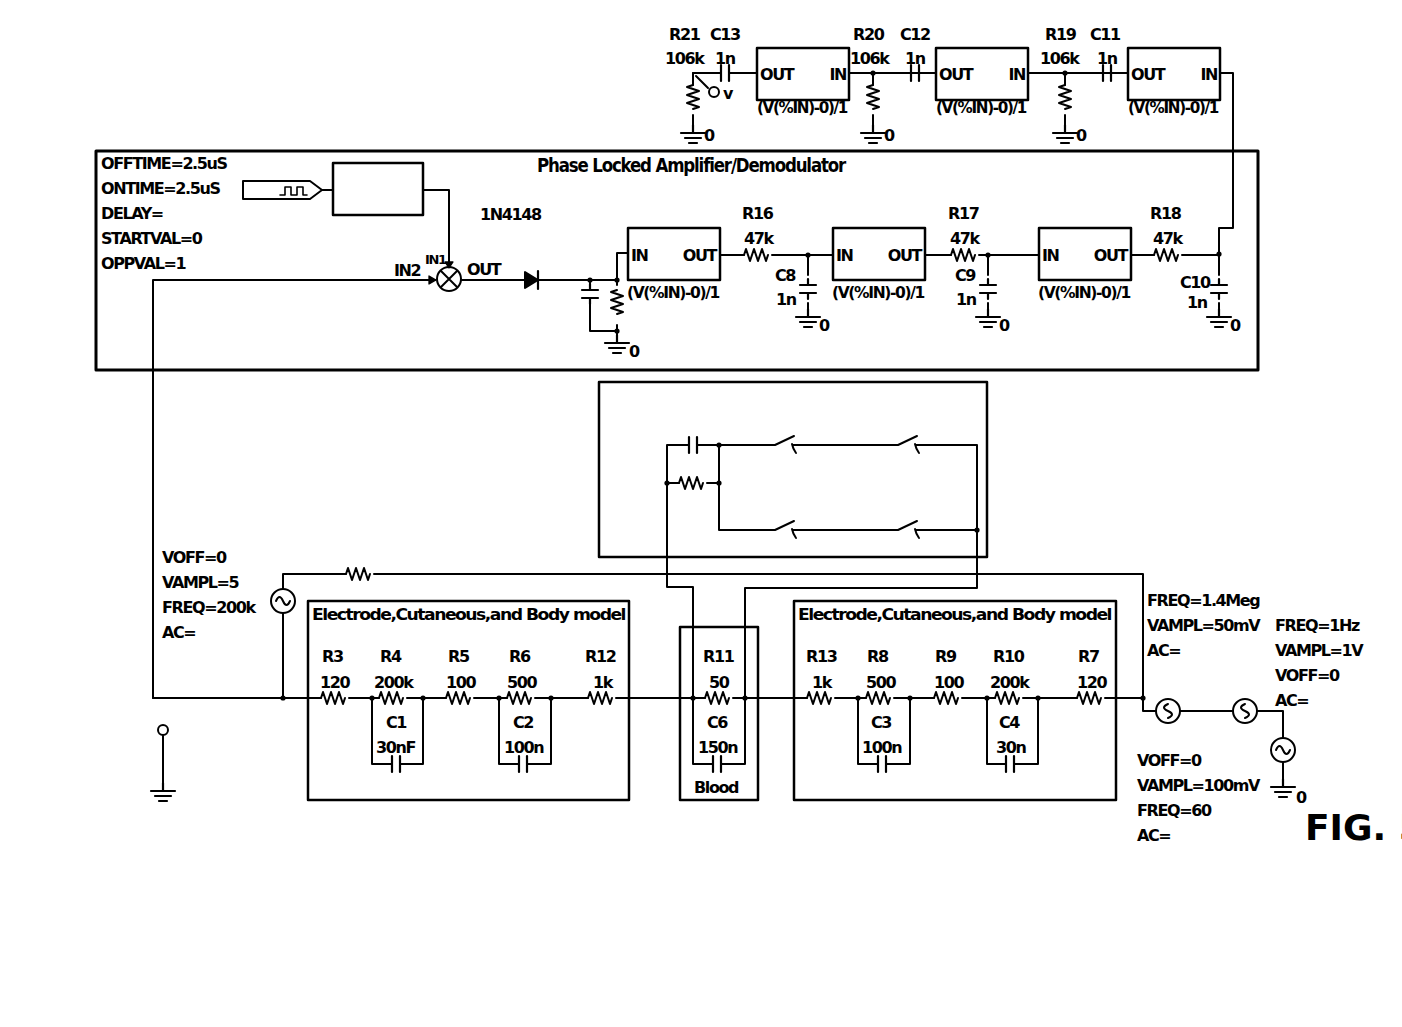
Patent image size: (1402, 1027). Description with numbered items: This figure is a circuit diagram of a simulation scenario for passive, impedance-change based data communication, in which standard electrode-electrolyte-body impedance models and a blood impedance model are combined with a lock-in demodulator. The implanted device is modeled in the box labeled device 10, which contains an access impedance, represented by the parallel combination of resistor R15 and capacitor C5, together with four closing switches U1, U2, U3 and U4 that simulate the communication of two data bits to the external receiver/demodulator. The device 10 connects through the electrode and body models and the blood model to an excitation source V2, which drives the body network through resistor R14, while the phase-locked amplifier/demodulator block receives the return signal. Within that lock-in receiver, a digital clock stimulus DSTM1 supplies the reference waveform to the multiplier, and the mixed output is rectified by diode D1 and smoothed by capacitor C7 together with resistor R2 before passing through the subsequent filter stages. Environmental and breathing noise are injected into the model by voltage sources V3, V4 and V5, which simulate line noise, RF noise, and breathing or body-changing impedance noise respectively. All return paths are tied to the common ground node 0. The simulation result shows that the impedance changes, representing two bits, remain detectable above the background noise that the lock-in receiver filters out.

The device 10 is at (599, 470).
The ground 0 is at (161, 755).
The digital clock stimulus DSTM1 is at (342, 195).
The diode 1N4148 D1 is at (533, 269).
The capacitor C7 is at (570, 304).
The resistor R2 is at (646, 308).
The device capacitor C5 is at (692, 423).
The device resistor R15 is at (668, 483).
The switch U1 is at (778, 445).
The switch U2 is at (904, 445).
The switch U3 is at (778, 530).
The switch U4 is at (904, 530).
The resistor R14 is at (361, 552).
The voltage source V2 is at (294, 597).
The voltage source V3 is at (1294, 750).
The voltage source V4 is at (1168, 722).
The voltage source V5 is at (1245, 722).